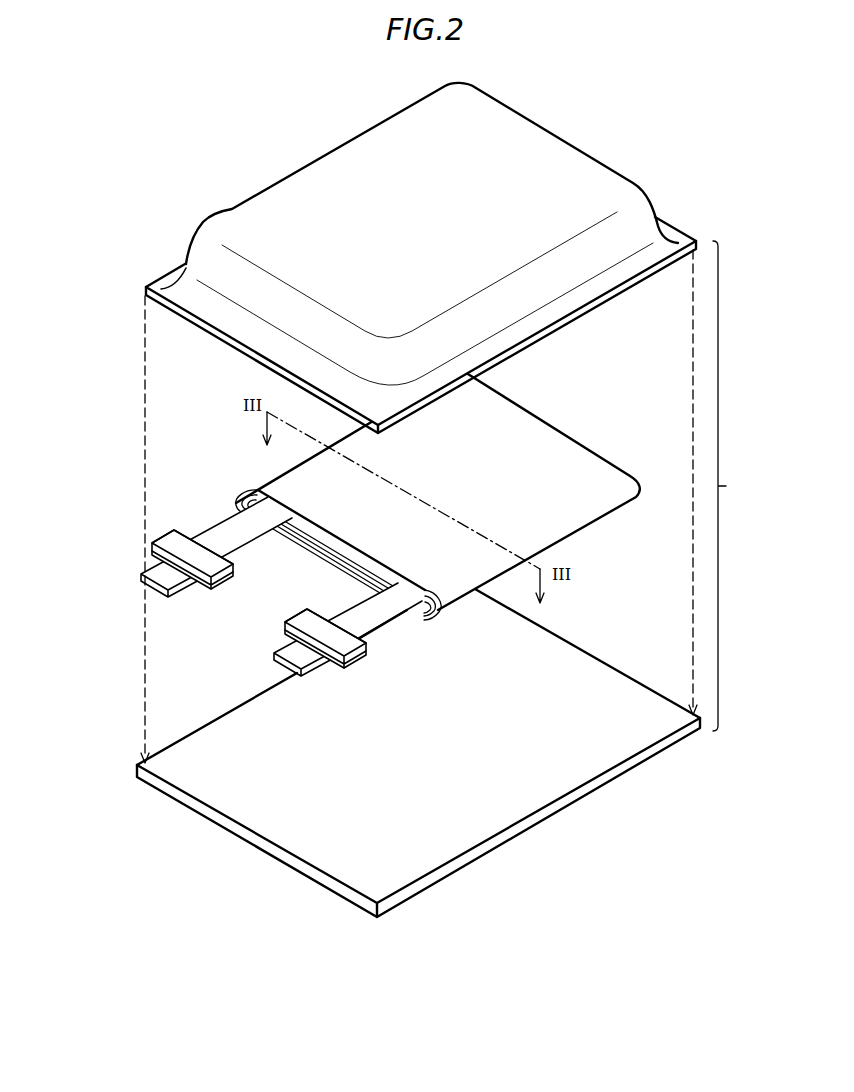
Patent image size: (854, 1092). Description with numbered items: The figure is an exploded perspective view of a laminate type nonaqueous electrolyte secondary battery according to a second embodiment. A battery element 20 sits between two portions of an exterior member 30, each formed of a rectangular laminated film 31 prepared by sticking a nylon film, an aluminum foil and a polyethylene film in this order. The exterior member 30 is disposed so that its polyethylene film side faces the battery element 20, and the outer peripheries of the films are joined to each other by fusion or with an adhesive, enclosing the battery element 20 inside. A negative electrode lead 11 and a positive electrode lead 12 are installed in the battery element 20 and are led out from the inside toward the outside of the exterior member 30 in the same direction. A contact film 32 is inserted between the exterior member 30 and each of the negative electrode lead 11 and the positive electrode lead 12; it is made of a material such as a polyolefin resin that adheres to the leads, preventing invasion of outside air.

The negative electrode lead 11 is at (283, 645).
The positive electrode lead 12 is at (148, 570).
The battery element 20 is at (511, 420).
The exterior member 30 is at (447, 502).
The laminated film 31 is at (578, 175).
The contact film 32 is at (308, 616).